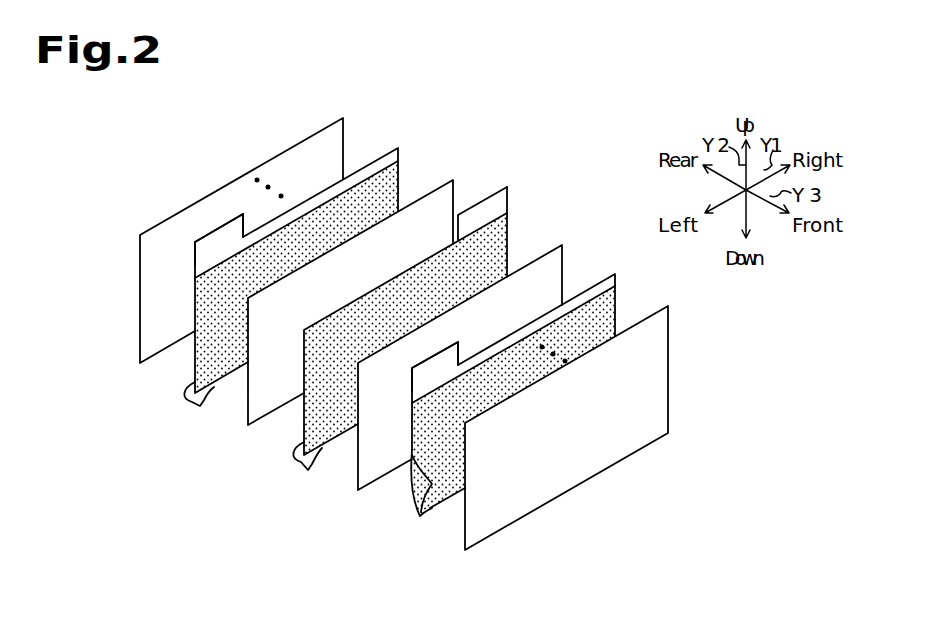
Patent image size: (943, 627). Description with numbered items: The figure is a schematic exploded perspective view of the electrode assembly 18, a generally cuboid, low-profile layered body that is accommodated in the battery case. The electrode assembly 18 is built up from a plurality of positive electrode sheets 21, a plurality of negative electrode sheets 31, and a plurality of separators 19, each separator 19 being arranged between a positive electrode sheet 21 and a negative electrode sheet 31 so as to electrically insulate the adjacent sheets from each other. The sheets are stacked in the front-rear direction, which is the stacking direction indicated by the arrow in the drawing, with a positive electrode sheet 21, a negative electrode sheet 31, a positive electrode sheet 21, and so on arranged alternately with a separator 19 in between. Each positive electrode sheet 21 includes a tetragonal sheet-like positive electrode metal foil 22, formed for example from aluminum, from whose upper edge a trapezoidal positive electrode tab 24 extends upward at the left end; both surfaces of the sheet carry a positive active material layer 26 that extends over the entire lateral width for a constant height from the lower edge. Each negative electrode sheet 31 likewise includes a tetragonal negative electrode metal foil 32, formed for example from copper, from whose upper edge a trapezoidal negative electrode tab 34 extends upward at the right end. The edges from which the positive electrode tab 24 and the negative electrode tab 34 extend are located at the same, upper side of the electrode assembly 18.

The electrode assembly 18 is at (615, 168).
The separator 19 is at (343, 127).
The positive electrode sheet 21 is at (398, 156).
The positive electrode metal foil 22 is at (305, 206).
The positive electrode tab 24 is at (210, 243).
The positive active material layer 26 is at (308, 469).
The negative electrode sheet 31 is at (510, 232).
The negative electrode metal foil 32 is at (377, 290).
The negative electrode tab 34 is at (503, 200).